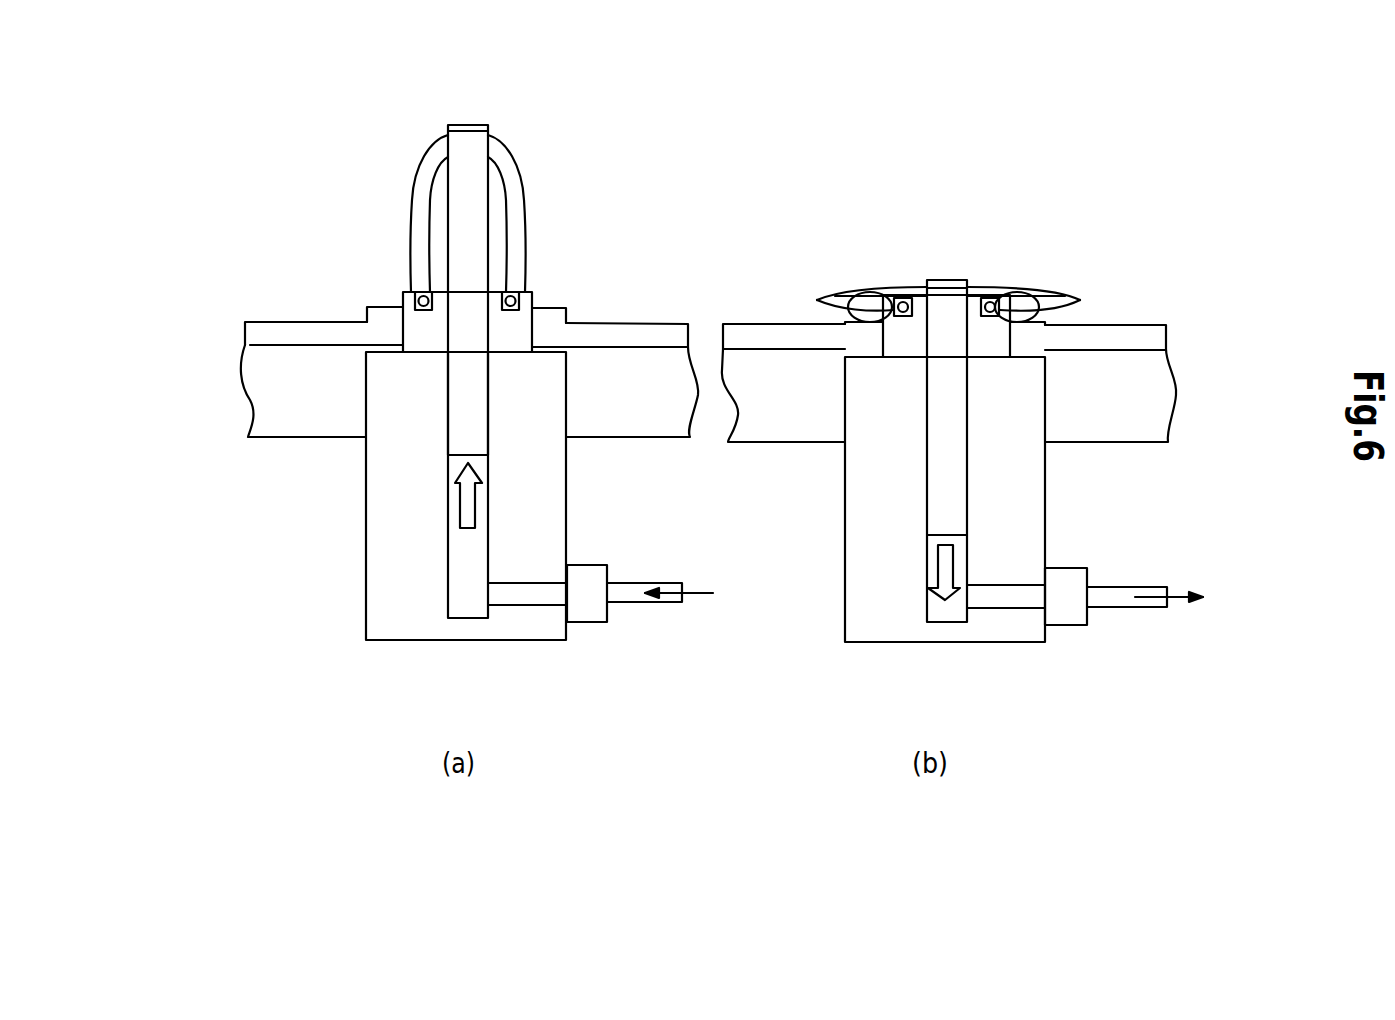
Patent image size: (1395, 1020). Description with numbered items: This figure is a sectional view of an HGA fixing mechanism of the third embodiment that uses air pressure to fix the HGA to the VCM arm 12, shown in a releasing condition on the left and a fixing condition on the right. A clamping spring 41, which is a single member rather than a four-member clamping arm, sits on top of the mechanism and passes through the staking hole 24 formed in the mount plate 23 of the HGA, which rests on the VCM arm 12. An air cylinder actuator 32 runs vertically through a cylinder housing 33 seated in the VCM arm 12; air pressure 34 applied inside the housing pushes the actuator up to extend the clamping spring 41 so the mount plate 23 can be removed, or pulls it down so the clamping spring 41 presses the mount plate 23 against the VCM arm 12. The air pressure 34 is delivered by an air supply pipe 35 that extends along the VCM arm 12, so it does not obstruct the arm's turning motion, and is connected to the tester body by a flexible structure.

The VCM arm 12 is at (287, 370).
The mount plate 23 is at (318, 332).
The staking hole 24 is at (397, 303).
The air cylinder actuator 32 is at (470, 405).
The cylinder housing 33 is at (407, 478).
The air pressure 34 is at (462, 538).
The air supply pipe 35 is at (633, 610).
The clamping spring 41 is at (428, 187).